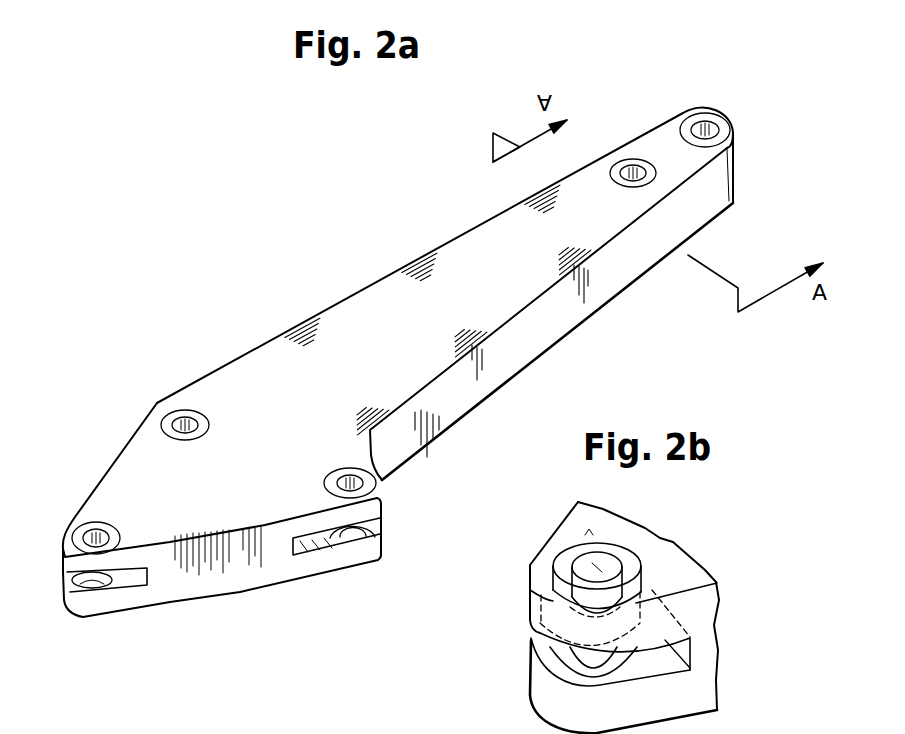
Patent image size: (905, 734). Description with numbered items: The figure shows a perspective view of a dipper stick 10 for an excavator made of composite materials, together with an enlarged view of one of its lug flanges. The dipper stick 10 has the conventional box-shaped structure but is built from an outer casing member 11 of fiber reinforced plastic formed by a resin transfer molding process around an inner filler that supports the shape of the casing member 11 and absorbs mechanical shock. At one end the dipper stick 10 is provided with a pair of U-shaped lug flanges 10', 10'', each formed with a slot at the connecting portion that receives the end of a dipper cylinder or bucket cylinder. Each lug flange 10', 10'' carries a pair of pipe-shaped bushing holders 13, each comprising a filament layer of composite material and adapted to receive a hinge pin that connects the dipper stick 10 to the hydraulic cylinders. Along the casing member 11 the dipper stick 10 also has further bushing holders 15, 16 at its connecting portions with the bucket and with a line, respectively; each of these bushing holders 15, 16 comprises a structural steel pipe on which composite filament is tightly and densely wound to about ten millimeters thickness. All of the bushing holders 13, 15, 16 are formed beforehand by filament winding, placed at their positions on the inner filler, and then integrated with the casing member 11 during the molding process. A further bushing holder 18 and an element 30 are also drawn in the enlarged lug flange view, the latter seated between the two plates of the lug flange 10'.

In FIG. 2a, the dipper stick 10 is at (220, 402).
In FIG. 2a, the lug flange 10' is at (195, 584).
In FIG. 2b, the lug flange 10' is at (594, 617).
In FIG. 2a, the lug flange 10'' is at (422, 512).
In FIG. 2a, the outer casing member 11 is at (567, 317).
In FIG. 2a, the bushing holder 13 is at (88, 522).
In FIG. 2b, the bushing holder 13 is at (570, 552).
In FIG. 2a, the bushing holder 15 is at (700, 112).
In FIG. 2a, the bushing holder 16 is at (632, 160).
In FIG. 2a, the bushing 18 is at (174, 408).
In FIG. 2a, the ball / bearing element 30 is at (68, 578).
In FIG. 2b, the ball / bearing element 30 is at (555, 653).